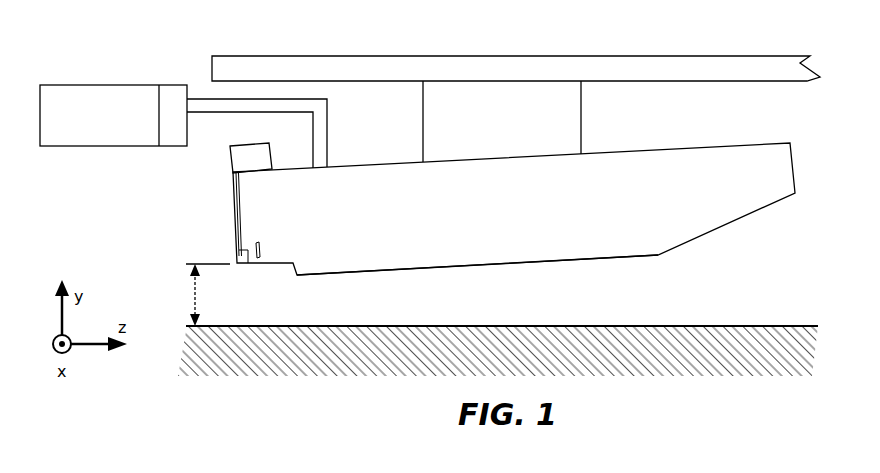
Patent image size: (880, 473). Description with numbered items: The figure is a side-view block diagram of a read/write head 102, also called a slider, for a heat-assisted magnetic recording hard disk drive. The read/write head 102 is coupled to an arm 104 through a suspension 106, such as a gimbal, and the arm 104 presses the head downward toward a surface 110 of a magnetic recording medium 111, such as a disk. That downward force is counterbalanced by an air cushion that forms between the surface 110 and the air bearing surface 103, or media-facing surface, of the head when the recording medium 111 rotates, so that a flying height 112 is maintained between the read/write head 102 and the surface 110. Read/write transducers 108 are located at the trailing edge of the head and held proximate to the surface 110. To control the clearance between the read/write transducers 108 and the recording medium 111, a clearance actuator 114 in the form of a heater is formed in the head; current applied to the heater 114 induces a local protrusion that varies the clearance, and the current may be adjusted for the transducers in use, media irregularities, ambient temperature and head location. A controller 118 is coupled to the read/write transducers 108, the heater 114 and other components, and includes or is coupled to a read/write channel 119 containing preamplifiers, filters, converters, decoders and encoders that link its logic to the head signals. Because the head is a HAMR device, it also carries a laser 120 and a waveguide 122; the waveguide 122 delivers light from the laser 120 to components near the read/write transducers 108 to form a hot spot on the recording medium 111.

The read/write head 102 is at (697, 152).
The air bearing surface 103 is at (383, 273).
The arm 104 is at (745, 62).
The suspension 106 is at (581, 113).
The read/write transducers 108 is at (238, 255).
The surface 110 is at (700, 326).
The magnetic recording medium 111 is at (712, 360).
The flying height 112 is at (192, 295).
The clearance actuator 114 is at (257, 242).
The controller 118 is at (95, 85).
The read/write channel 119 is at (168, 85).
The laser 120 is at (250, 152).
The waveguide 122 is at (235, 192).